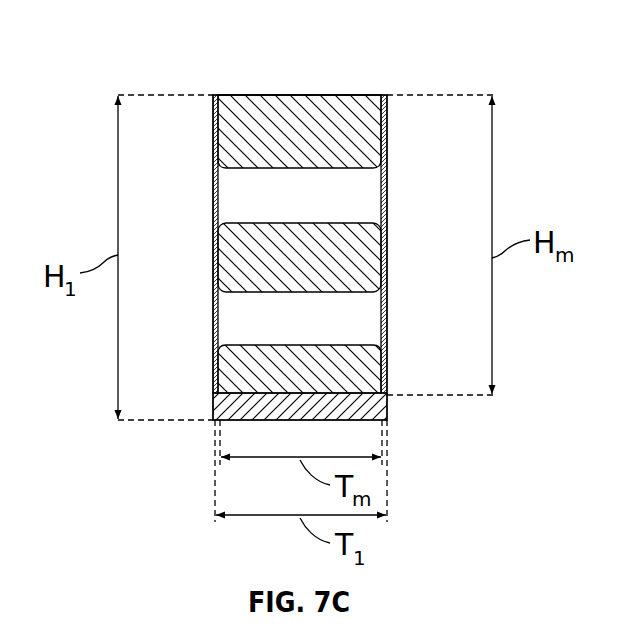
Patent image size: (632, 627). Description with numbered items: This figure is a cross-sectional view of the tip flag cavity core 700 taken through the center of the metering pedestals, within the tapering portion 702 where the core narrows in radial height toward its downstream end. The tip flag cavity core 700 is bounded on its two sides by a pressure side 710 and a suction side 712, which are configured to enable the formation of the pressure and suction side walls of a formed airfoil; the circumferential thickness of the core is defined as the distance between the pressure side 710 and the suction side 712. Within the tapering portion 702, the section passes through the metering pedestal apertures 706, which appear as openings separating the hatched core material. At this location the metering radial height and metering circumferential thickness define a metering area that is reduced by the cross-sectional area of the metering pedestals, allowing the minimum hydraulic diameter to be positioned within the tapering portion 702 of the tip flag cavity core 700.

The tip flag cavity core 700 is at (320, 116).
The tapering portion 702 is at (277, 91).
The metering pedestal apertures 706 is at (345, 179).
The pressure side 710 is at (213, 323).
The suction side 712 is at (387, 381).